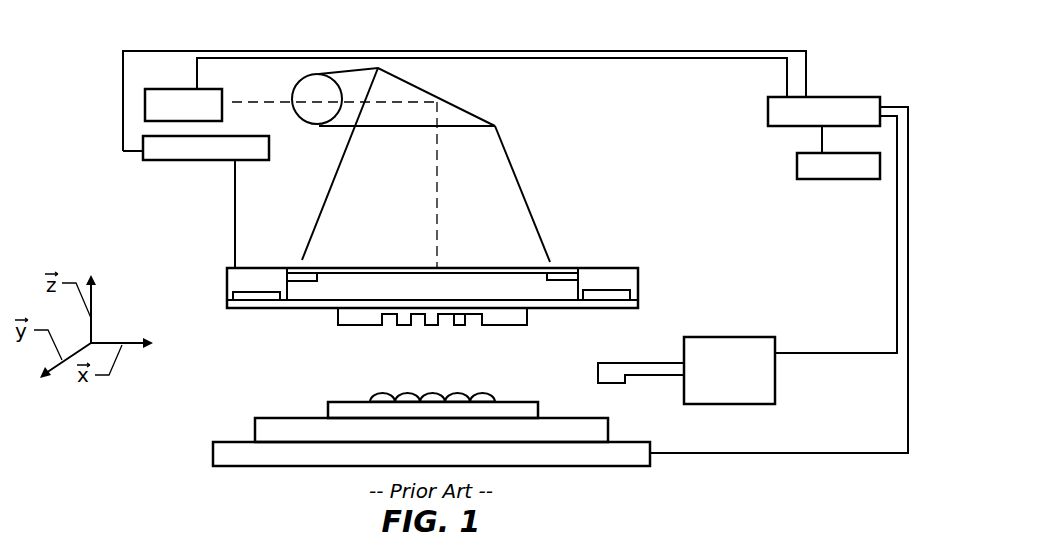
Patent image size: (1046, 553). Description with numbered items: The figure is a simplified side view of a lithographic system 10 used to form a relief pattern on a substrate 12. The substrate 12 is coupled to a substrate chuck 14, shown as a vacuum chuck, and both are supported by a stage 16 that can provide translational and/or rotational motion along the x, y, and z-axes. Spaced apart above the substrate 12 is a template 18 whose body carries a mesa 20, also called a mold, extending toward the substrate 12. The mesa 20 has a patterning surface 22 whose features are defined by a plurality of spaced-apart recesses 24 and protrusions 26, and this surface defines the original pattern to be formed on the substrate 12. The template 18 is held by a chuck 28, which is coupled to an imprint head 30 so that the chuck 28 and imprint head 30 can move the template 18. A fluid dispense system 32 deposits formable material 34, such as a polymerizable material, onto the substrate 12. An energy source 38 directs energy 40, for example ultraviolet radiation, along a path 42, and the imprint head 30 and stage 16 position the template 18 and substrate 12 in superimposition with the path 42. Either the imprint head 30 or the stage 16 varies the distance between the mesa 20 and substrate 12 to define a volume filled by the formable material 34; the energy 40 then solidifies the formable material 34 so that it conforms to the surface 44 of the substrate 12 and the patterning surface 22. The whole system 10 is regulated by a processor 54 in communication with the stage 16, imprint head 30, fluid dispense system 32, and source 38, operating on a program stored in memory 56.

The lithographic system 10 is at (721, 34).
The substrate 12 is at (340, 410).
The substrate chuck 14 is at (275, 430).
The stage 16 is at (228, 455).
The template 18 is at (250, 308).
The mesa 20 is at (492, 325).
The patterning surface 22 is at (338, 324).
The recesses 24 is at (417, 325).
The protrusions 26 is at (463, 326).
The chuck 28 is at (273, 270).
The imprint head 30 is at (269, 148).
The fluid dispense system 32 is at (744, 337).
The formable material 34 is at (380, 396).
The energy source 38 is at (222, 108).
The energy 40 is at (325, 197).
The path 42 is at (437, 187).
The surface 44 is at (513, 402).
The processor 54 is at (768, 112).
The memory 56 is at (797, 167).